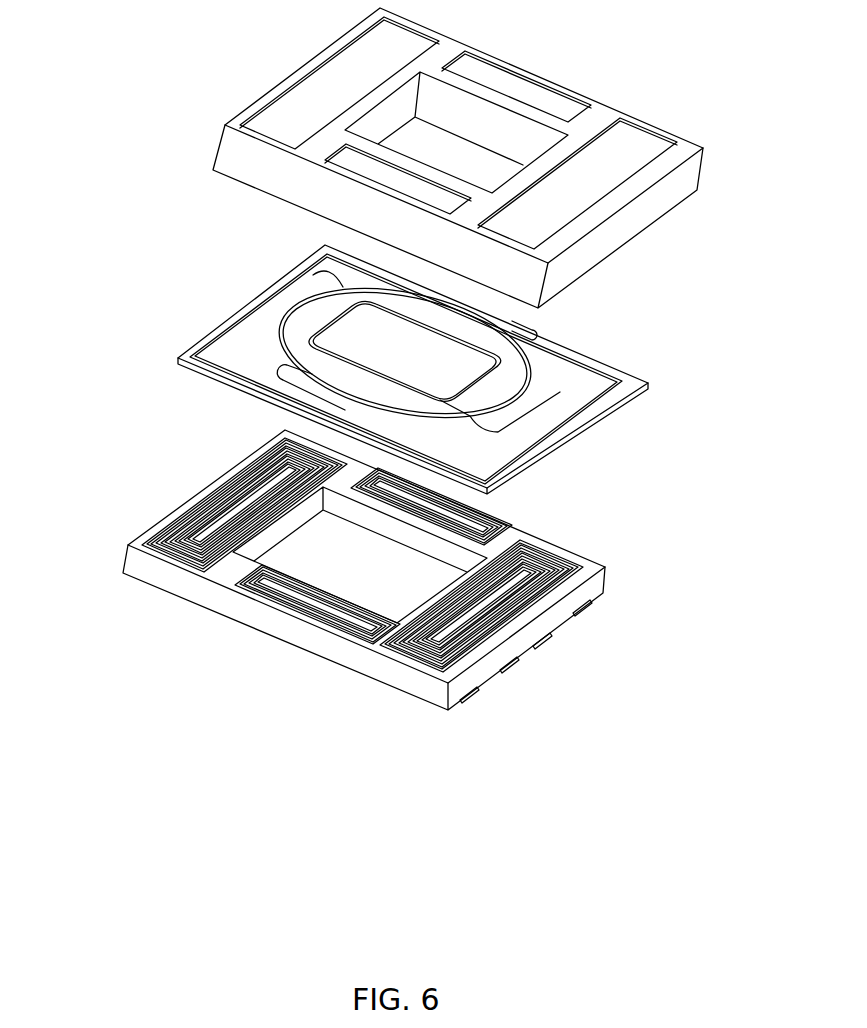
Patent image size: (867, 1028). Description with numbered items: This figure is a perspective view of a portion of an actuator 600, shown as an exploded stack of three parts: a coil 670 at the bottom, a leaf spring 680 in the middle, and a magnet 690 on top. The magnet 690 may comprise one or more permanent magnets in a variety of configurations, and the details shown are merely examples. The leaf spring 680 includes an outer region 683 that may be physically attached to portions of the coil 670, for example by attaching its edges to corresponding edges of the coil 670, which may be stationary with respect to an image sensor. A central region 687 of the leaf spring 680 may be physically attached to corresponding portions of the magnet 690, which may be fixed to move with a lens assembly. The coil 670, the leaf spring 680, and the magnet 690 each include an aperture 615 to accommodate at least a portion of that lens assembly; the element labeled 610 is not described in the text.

The actuator 600 is at (686, 34).
The magnet 690 is at (307, 59).
The aperture 615 is at (462, 164).
The leaf spring 680 is at (210, 331).
The central region 687 is at (300, 302).
The raised dome / contact 610 is at (508, 377).
The outer region 683 is at (583, 428).
The coil 670 is at (183, 505).